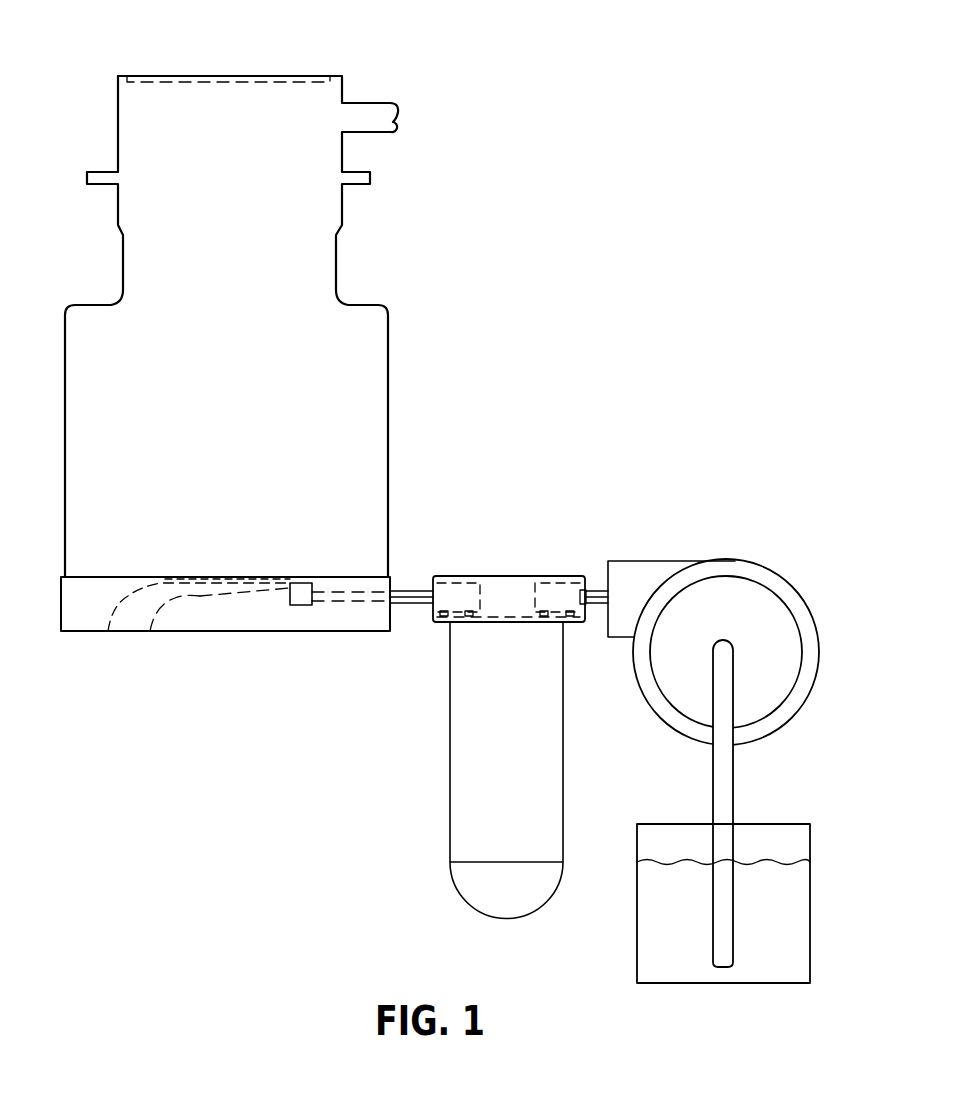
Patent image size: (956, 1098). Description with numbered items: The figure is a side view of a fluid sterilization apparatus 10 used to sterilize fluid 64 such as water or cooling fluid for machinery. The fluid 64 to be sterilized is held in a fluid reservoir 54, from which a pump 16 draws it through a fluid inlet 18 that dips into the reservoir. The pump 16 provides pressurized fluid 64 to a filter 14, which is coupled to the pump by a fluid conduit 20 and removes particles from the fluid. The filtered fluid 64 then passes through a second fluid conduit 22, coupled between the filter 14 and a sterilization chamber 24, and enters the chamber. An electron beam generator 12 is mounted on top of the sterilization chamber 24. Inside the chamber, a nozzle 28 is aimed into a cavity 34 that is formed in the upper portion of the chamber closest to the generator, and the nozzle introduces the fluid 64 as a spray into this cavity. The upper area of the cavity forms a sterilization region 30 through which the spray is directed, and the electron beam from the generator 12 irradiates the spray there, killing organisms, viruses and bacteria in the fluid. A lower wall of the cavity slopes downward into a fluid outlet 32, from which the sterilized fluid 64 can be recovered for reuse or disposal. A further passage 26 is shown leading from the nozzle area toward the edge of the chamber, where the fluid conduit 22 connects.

The fluid sterilization apparatus 10 is at (575, 240).
The electron beam generator 12 is at (390, 343).
The filter 14 is at (509, 575).
The pump 16 is at (783, 577).
The fluid inlet 18 is at (745, 646).
The fluid conduit 20 is at (598, 608).
The fluid conduit 22 is at (408, 590).
The sterilization chamber 24 is at (61, 607).
The conduit 26 is at (349, 605).
The nozzle 28 is at (301, 606).
The sterilization region 30 is at (200, 598).
The fluid outlet 32 is at (131, 633).
The cavity 34 is at (121, 608).
The fluid reservoir 54 is at (778, 823).
The fluid 64 is at (660, 862).